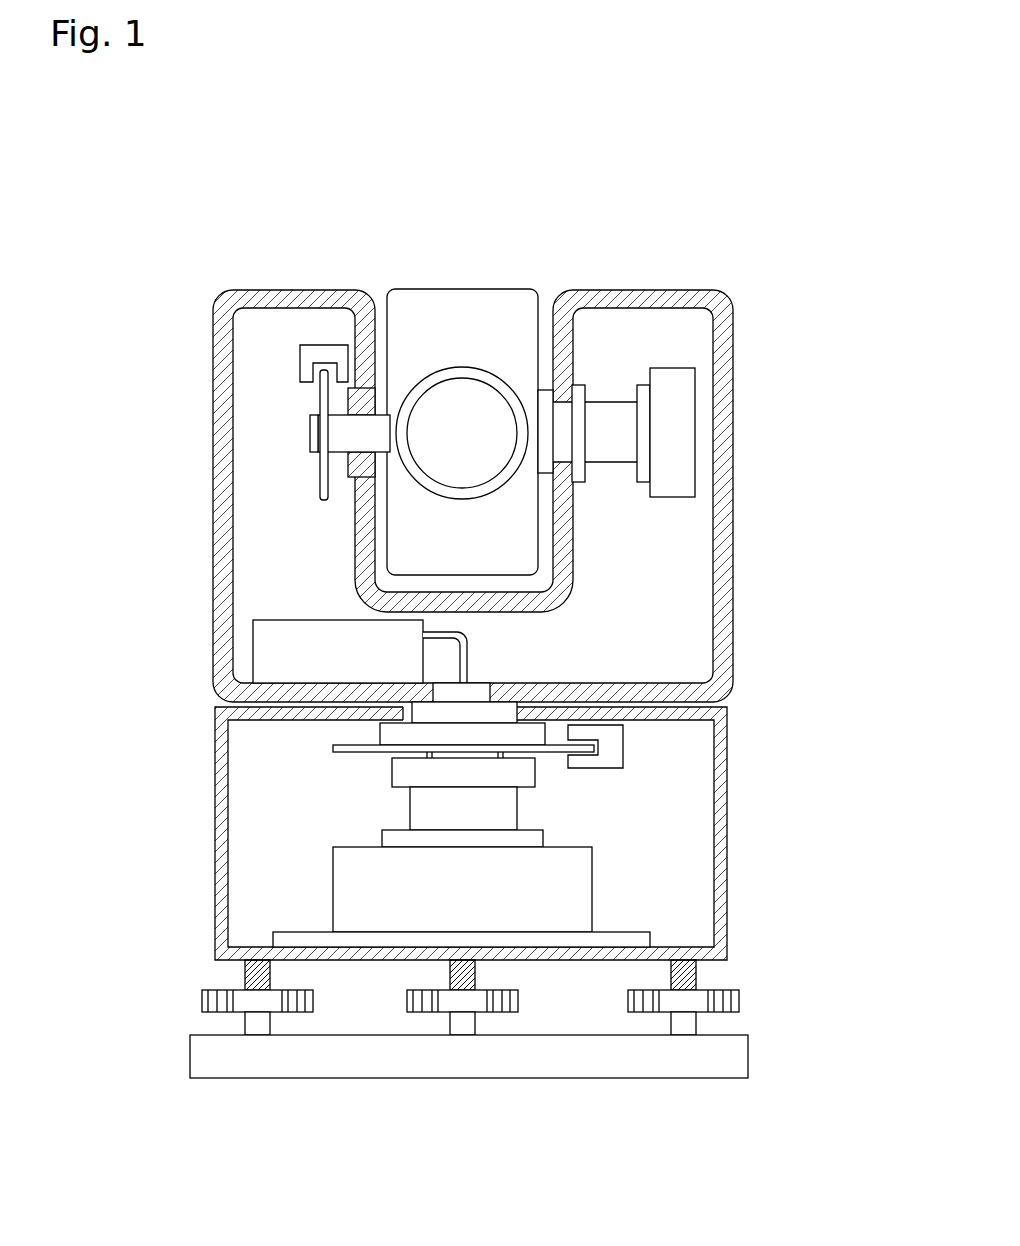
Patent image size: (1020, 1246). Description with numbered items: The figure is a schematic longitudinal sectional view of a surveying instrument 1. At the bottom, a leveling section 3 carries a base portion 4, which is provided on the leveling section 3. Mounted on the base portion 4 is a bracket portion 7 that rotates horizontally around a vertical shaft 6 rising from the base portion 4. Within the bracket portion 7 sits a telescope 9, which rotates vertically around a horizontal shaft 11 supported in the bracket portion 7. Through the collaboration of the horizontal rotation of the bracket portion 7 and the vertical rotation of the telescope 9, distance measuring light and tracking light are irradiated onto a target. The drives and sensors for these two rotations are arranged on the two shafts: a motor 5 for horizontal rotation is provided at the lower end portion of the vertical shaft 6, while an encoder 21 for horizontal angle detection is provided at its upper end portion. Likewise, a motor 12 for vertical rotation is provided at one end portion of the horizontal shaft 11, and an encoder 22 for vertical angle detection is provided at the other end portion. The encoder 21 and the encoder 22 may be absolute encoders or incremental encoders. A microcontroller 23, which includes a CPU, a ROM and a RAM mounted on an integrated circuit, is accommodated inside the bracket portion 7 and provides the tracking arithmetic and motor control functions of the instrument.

The surveying instrument 1 is at (531, 262).
The leveling section 3 is at (742, 1000).
The base portion 4 is at (734, 888).
The motor 5 is at (600, 858).
The vertical shaft 6 is at (518, 705).
The bracket portion 7 is at (733, 563).
The telescope 9 is at (415, 289).
The horizontal shaft 11 is at (312, 427).
The motor 12 is at (671, 364).
The encoder 21 is at (629, 743).
The encoder 22 is at (293, 338).
The microcontroller 23 is at (273, 619).